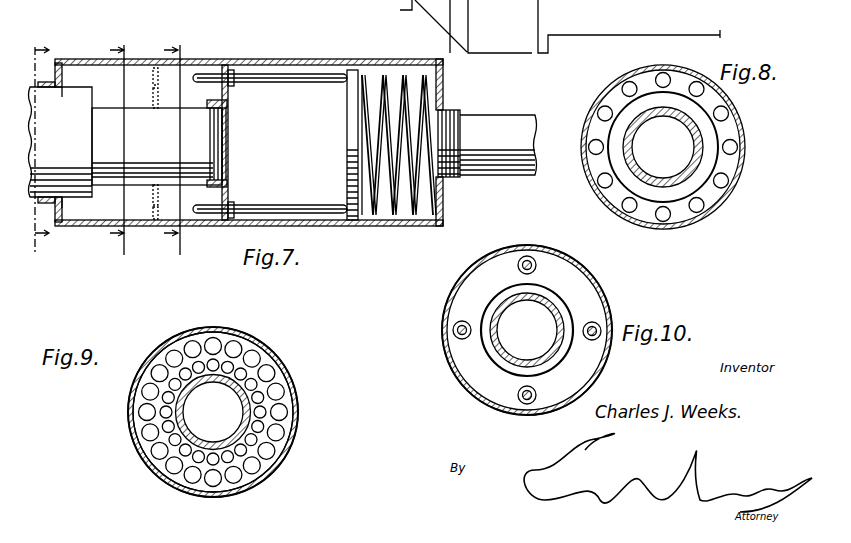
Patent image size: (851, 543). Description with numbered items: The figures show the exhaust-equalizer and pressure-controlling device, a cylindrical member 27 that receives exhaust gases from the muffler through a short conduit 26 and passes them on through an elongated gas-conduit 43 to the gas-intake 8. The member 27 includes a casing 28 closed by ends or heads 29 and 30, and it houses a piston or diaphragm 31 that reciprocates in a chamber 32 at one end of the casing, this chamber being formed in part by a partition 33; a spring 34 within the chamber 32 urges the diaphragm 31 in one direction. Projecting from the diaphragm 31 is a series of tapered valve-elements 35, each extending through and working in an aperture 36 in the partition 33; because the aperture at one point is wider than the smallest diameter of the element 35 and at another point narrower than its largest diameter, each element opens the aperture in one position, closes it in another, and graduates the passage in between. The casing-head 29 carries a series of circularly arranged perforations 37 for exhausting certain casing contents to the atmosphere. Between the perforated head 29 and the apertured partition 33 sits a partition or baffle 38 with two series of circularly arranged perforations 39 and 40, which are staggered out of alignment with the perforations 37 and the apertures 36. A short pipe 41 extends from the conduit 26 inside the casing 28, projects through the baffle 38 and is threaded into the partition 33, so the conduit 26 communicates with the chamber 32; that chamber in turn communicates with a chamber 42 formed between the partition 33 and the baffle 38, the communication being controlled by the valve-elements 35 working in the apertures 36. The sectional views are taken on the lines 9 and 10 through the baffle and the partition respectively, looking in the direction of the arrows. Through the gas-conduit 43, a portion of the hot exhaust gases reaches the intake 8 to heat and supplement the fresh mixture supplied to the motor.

In FIG. 7, the gas-intake 8 is at (38, 153).
In FIG. 7, the section line 9- 9 is at (119, 147).
In FIG. 7, the section line 10- 10 is at (175, 146).
In FIG. 8, the short conduit 26 is at (705, 145).
In FIG. 7, the cylindrical member 27 is at (249, 127).
In FIG. 9, the cylindrical member 27 is at (224, 412).
In FIG. 10, the cylindrical member 27 is at (515, 322).
In FIG. 7, the casing 28 is at (358, 226).
In FIG. 8, the casing 28 is at (737, 191).
In FIG. 9, the casing 28 is at (298, 405).
In FIG. 10, the casing 28 is at (572, 272).
In FIG. 7, the casing-head 29 is at (63, 85).
In FIG. 8, the casing-head 29 is at (727, 163).
In FIG. 7, the casing end 30 is at (445, 90).
In FIG. 7, the piston or diaphragm 31 is at (347, 169).
In FIG. 7, the chamber 32 is at (307, 116).
In FIG. 7, the partition 33 is at (231, 78).
In FIG. 10, the partition 33 is at (580, 297).
In FIG. 7, the spring 34 is at (413, 226).
In FIG. 7, the tapered valve-elements 35 is at (272, 84).
In FIG. 10, the tapered valve-elements 35 is at (533, 262).
In FIG. 7, the aperture 36 is at (229, 68).
In FIG. 10, the aperture 36 is at (519, 268).
In FIG. 7, the perforations 37 is at (63, 222).
In FIG. 8, the perforations 37 is at (626, 82).
In FIG. 7, the baffle 38 is at (153, 200).
In FIG. 9, the baffle 38 is at (280, 378).
In FIG. 7, the perforations 39 is at (153, 78).
In FIG. 9, the perforations 39 is at (268, 368).
In FIG. 7, the perforations 40 is at (153, 95).
In FIG. 9, the perforations 40 is at (214, 358).
In FIG. 7, the short pipe 41 is at (157, 146).
In FIG. 9, the short pipe 41 is at (221, 443).
In FIG. 10, the short pipe 41 is at (503, 362).
In FIG. 7, the chamber 42 is at (207, 136).
In FIG. 7, the elongated gas-conduit 43 is at (492, 122).